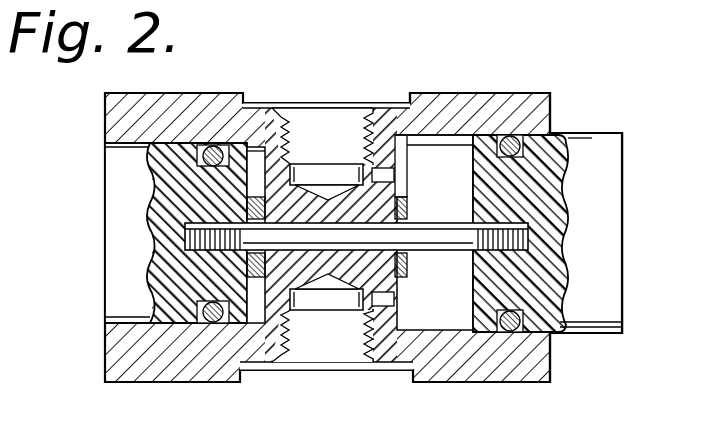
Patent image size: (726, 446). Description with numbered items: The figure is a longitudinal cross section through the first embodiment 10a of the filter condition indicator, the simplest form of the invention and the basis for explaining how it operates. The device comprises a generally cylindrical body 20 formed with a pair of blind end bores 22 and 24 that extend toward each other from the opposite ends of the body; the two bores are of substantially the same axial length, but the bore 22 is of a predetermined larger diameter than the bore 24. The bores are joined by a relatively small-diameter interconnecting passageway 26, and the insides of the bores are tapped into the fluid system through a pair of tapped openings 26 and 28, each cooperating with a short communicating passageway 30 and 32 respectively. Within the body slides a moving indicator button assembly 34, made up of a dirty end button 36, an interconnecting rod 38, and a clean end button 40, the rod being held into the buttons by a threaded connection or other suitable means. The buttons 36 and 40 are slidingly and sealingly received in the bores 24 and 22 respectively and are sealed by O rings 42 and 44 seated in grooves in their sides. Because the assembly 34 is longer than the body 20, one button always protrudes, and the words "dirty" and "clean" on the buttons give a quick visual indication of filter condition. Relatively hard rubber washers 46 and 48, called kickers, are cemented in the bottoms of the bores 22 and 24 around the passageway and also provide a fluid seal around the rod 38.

The first embodiment 10a is at (386, 70).
The body 20 is at (118, 93).
The blind end bore 22 is at (450, 308).
The blind end bore 24 is at (107, 148).
The interconnecting passageway / tapped opening 26 is at (308, 107).
The tapped opening 28 is at (293, 333).
The communicating passageway 30 is at (433, 93).
The communicating passageway 32 is at (281, 300).
The moving indicator button assembly 34 is at (96, 223).
The dirty end button 36 is at (108, 300).
The interconnecting rod 38 is at (362, 249).
The clean end button 40 is at (621, 150).
The O ring 42 is at (210, 323).
The O ring 44 is at (513, 332).
The washer (kicker) 46 is at (436, 202).
The washer (kicker) 48 is at (248, 263).